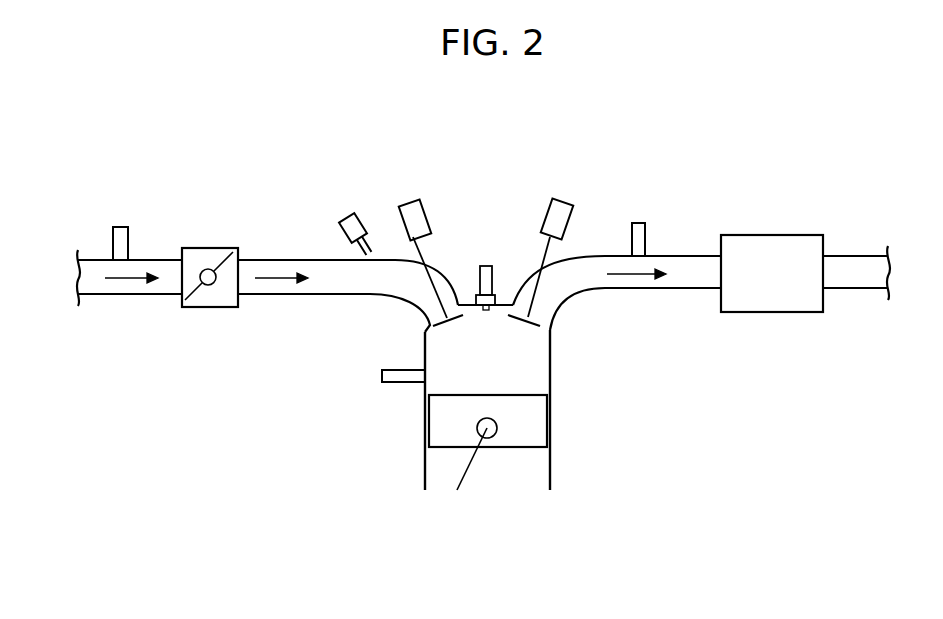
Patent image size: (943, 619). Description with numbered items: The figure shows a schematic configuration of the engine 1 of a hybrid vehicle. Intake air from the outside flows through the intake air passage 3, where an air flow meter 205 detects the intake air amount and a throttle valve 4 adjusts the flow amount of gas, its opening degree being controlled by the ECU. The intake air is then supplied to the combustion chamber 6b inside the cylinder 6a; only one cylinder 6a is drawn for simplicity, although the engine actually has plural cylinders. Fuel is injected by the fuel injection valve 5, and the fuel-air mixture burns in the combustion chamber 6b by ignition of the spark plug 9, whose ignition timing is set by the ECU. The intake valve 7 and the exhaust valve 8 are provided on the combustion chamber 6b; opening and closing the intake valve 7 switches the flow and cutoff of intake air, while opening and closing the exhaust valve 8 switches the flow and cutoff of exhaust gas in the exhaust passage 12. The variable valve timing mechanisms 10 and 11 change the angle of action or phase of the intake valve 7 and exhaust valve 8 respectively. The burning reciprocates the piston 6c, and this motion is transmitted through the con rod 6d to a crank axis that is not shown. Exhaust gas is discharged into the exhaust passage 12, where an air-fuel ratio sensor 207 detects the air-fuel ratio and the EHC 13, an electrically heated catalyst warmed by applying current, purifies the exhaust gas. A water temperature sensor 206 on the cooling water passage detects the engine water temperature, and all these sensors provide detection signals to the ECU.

The engine 1 is at (490, 120).
The intake air passage 3 is at (127, 297).
The throttle valve 4 is at (203, 300).
The fuel injection valve 5 is at (341, 226).
The intake valve 7 is at (426, 292).
The exhaust valve 8 is at (543, 290).
The spark plug 9 is at (492, 280).
The variable valve timing mechanism 10 is at (394, 215).
The variable valve timing mechanism 11 is at (578, 212).
The exhaust passage 12 is at (648, 290).
The EHC (electrically heated catalyst) 13 is at (773, 312).
The cylinder 6a is at (550, 368).
The combustion chamber 6b is at (497, 361).
The piston 6c is at (530, 428).
The con rod 6d is at (463, 475).
The air flow meter 205 is at (128, 243).
The water temperature sensor 206 is at (381, 377).
The air-fuel ratio sensor 207 is at (645, 233).